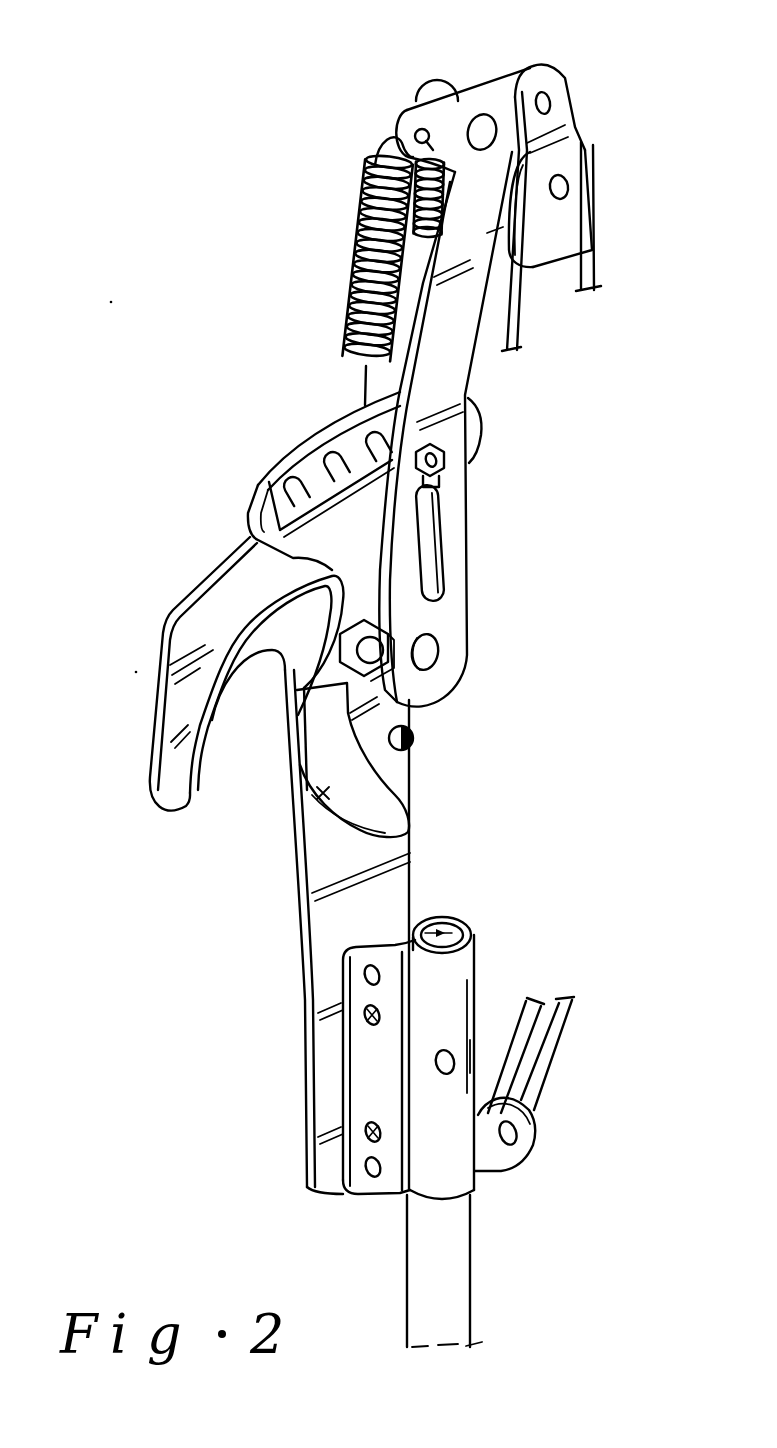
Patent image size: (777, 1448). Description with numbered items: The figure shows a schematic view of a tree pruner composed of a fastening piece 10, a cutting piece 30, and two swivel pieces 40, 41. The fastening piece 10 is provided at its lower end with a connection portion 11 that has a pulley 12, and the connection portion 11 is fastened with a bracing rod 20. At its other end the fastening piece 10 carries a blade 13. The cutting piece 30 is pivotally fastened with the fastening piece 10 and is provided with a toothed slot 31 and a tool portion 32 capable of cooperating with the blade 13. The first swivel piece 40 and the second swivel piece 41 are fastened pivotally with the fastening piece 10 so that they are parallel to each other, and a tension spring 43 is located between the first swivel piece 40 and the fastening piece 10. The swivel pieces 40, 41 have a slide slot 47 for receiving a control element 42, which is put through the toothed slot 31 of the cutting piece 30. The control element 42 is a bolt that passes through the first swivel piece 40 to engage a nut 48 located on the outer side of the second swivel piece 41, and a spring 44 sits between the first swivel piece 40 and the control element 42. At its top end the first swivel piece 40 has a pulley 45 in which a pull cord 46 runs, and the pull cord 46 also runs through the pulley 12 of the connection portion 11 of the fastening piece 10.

The fastening piece 10 is at (322, 935).
The connection portion 11 is at (457, 977).
The pulley 12 is at (534, 1120).
The blade 13 is at (226, 697).
The bracing rod 20 is at (453, 1283).
The cutting piece 30 is at (312, 448).
The toothed slot 31 is at (265, 480).
The tool portion 32 is at (330, 792).
The first swivel piece 40 is at (498, 100).
The second swivel piece 41 is at (436, 80).
The control element 42 is at (446, 458).
The tension spring 43 is at (355, 255).
The spring 44 is at (397, 142).
The pulley 45 is at (596, 157).
The pull cord 46 is at (599, 267).
The slide slot 47 is at (428, 574).
The nut 48 is at (440, 490).